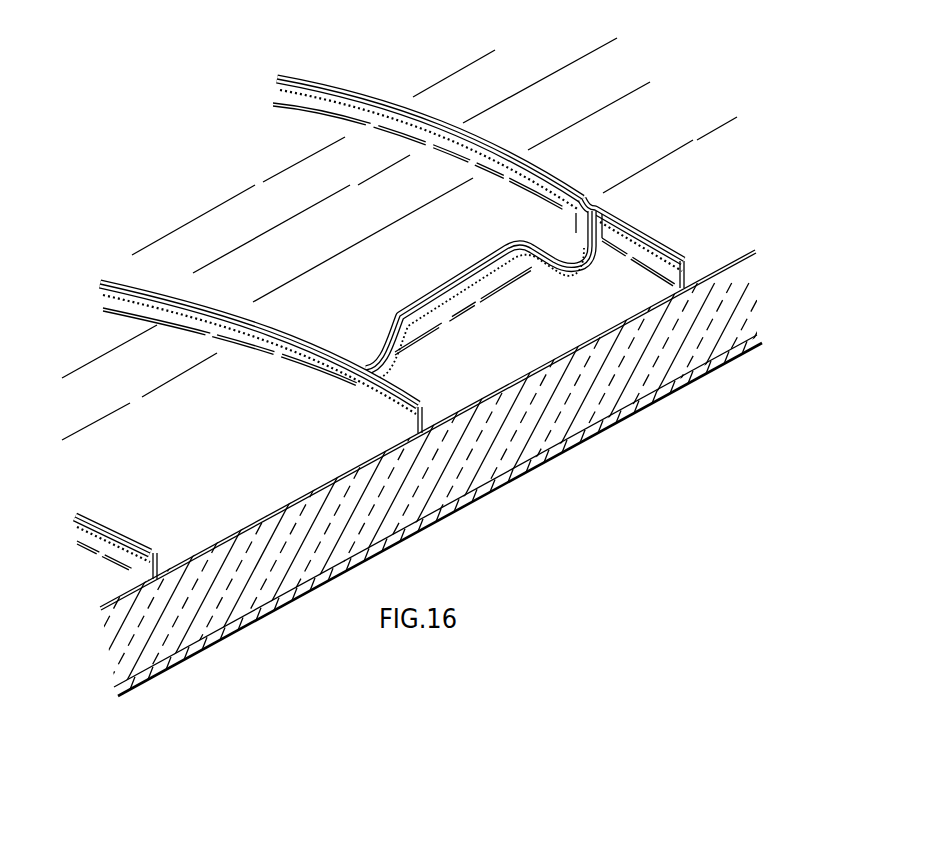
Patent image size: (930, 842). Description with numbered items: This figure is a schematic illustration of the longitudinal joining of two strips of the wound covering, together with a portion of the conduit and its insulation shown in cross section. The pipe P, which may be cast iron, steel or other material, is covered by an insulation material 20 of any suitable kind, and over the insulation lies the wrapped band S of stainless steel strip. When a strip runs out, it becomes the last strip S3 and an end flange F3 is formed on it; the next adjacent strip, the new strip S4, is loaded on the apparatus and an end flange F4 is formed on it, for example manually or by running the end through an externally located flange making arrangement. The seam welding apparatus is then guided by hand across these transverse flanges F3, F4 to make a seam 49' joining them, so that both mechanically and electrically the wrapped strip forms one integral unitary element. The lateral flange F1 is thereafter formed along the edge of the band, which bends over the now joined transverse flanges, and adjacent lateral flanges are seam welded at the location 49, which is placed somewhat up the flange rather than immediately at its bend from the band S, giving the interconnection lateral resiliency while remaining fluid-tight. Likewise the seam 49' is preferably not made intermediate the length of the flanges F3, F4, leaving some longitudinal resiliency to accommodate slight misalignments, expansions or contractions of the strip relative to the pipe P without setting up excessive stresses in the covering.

The lateral flange F1 is at (497, 148).
The seam weld location 49 is at (620, 217).
The end flange F3 is at (452, 282).
The last strip S3 is at (347, 320).
The end flange F4 is at (463, 297).
The seam 49' is at (479, 319).
The new strip S4 is at (500, 383).
The band S is at (261, 441).
The pipe P is at (537, 458).
The insulation material 20 is at (448, 483).